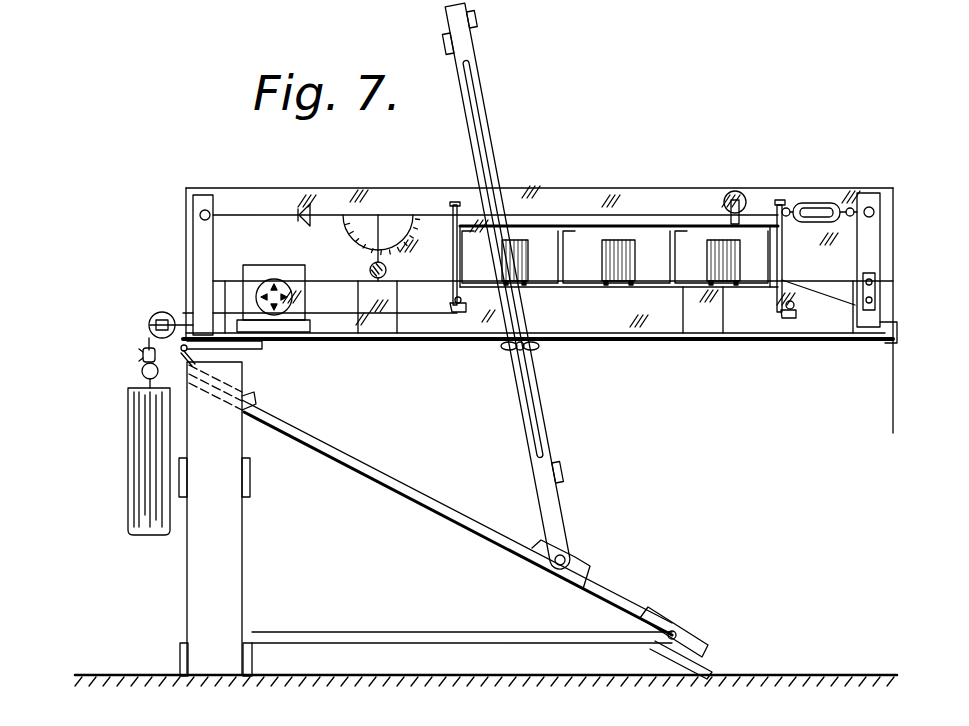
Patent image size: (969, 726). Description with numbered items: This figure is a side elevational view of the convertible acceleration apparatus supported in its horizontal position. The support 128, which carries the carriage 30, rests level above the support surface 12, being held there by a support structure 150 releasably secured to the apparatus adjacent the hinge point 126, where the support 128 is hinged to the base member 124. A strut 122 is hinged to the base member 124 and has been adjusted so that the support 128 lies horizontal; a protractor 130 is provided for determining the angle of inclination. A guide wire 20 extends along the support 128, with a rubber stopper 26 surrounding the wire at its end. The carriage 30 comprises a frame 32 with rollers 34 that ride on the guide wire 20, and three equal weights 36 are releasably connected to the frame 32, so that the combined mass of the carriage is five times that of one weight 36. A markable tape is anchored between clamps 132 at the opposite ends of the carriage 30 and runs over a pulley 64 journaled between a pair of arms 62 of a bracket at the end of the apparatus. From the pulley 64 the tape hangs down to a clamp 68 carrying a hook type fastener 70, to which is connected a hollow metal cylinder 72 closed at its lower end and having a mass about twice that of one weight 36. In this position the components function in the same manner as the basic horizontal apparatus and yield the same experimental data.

The support surface 12 is at (683, 347).
The guide wire 20 is at (657, 214).
The rubber stopper 26 is at (304, 203).
The carriage 30 is at (613, 291).
The frame 32 is at (783, 248).
The roller 34 is at (741, 194).
The equal weight 36 is at (520, 262).
The arm 62 is at (178, 322).
The pulley 64 is at (150, 322).
The clamp 68 is at (138, 350).
The hook type fastener 70 is at (141, 371).
The hollow metal cylinder 72 is at (143, 450).
The strut 122 is at (549, 447).
The base member 124 is at (421, 498).
The hinge point 126 is at (240, 350).
The support 128 is at (823, 341).
The protractor 130 is at (413, 213).
The clamp 132 is at (462, 314).
The support structure 150 is at (230, 513).